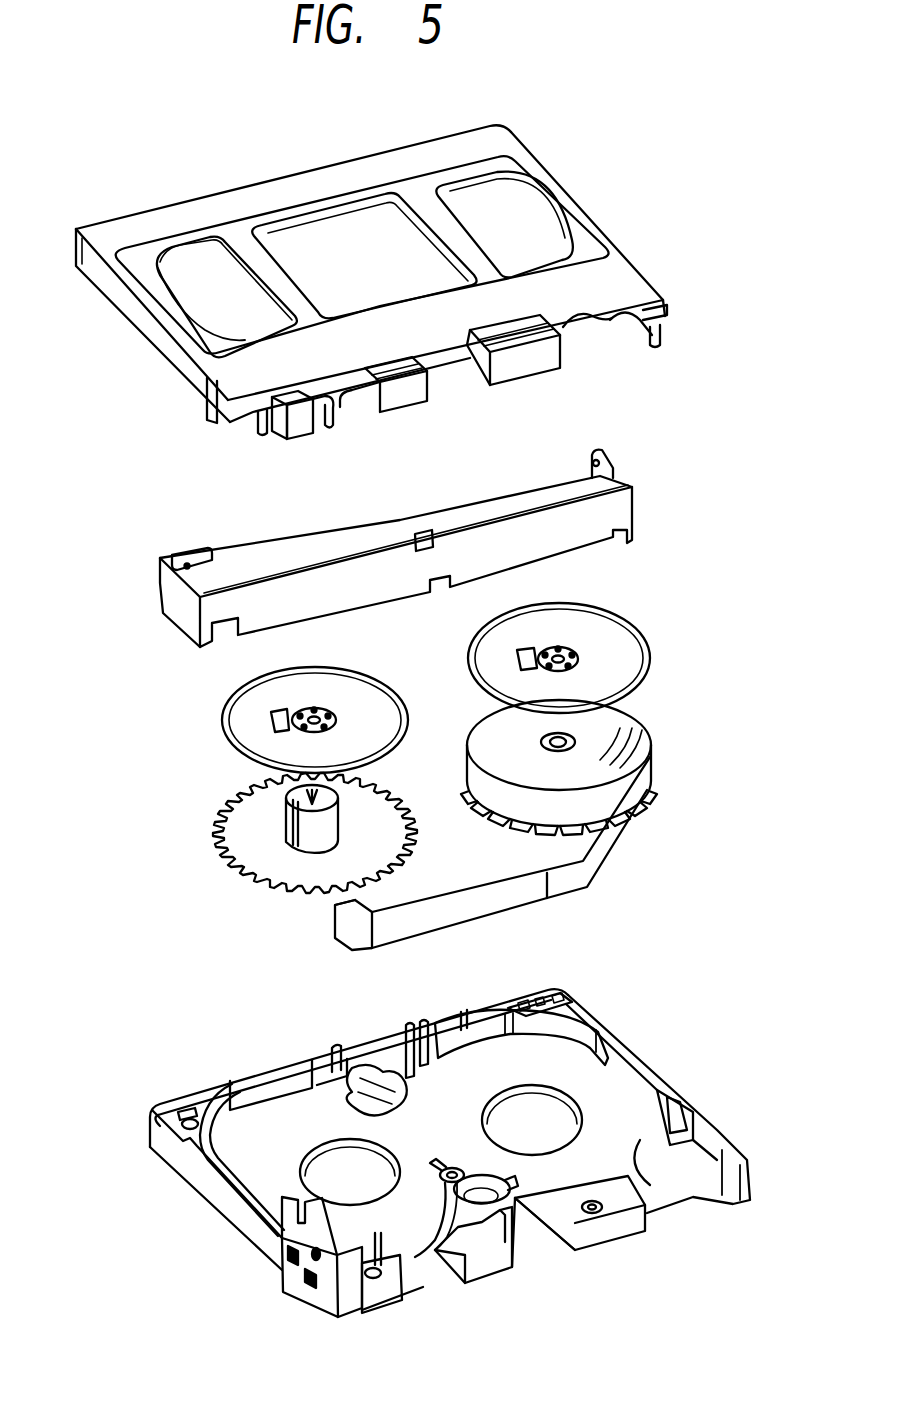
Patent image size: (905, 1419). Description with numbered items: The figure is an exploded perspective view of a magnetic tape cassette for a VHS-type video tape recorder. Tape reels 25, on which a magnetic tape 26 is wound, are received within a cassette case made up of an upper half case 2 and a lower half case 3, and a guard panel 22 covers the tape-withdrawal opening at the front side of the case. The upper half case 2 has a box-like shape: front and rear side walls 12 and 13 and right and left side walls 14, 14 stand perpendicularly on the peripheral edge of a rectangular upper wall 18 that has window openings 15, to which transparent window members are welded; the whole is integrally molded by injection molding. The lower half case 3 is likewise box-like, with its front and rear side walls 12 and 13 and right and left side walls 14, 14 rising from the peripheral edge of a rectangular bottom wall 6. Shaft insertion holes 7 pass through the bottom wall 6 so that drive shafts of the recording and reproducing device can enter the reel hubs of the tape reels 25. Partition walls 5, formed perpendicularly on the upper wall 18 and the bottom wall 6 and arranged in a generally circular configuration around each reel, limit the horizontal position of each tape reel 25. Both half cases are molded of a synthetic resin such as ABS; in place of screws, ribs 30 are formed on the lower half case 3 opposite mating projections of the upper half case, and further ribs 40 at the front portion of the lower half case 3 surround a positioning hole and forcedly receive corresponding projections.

The upper half case 2 is at (289, 193).
The lower half case 3 is at (296, 1290).
The partition walls 5 is at (478, 1048).
The bottom wall 6 is at (430, 1138).
The shaft insertion holes 7 is at (315, 1148).
The front side wall 12 is at (540, 365).
The rear side wall 13 is at (190, 200).
The right and left side walls 14 is at (612, 233).
The window openings 15 is at (187, 272).
The upper wall 18 is at (377, 160).
The guard panel 22 is at (352, 573).
The tape reels 25 is at (665, 692).
The magnetic tape 26 is at (568, 884).
The ribs 30 is at (568, 995).
The ribs 40 is at (355, 1310).